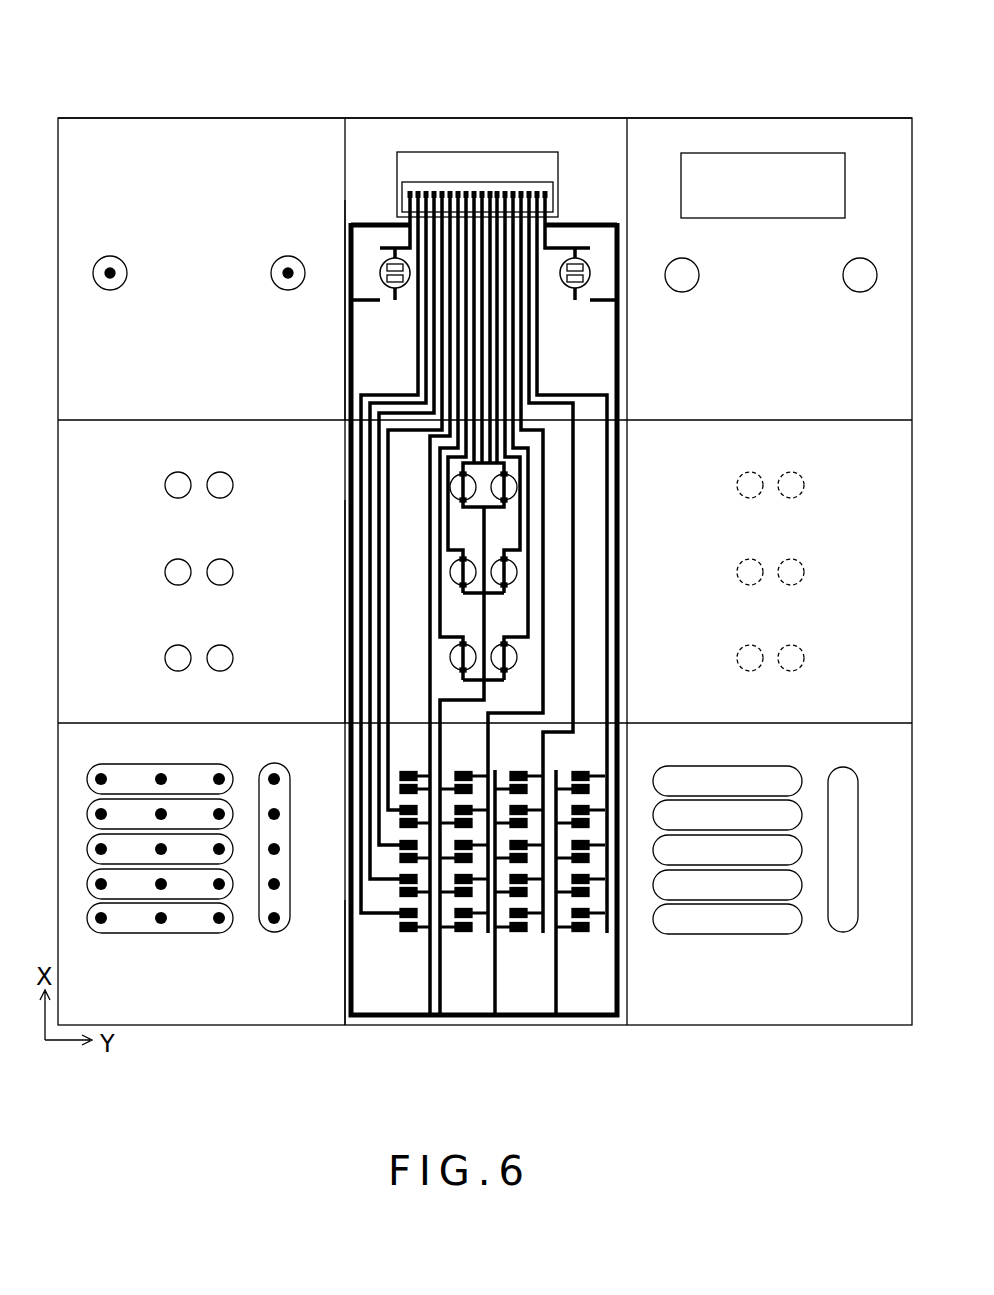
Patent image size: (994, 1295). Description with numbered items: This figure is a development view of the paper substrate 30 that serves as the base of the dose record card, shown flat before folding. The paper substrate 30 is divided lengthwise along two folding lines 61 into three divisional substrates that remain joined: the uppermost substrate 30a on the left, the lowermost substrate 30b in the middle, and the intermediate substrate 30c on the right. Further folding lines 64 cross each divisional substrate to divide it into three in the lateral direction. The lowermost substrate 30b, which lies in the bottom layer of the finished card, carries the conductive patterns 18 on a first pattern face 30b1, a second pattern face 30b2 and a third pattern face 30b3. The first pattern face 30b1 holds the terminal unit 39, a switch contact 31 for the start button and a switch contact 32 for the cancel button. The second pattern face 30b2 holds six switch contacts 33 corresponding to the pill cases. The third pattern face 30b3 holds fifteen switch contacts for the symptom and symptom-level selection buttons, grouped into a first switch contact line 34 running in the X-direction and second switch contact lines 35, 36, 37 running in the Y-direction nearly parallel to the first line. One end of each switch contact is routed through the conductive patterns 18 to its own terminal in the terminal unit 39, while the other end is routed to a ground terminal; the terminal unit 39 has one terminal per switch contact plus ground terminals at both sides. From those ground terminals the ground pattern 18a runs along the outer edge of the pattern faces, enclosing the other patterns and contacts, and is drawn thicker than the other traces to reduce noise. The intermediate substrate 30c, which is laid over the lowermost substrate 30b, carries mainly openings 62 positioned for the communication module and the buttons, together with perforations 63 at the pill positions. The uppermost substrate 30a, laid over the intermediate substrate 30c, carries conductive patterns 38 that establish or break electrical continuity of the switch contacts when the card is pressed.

The paper substrate 30 is at (679, 58).
The uppermost substrate 30a is at (305, 130).
The lowermost substrate 30b is at (507, 128).
The intermediate substrate 30c is at (675, 135).
The first pattern face 30b1 is at (347, 357).
The second pattern face 30b2 is at (347, 618).
The third pattern face 30b3 is at (416, 995).
The conductive patterns 18 is at (622, 617).
The ground pattern 18a is at (380, 223).
The switch contact 31 is at (408, 289).
The switch contact 32 is at (553, 289).
The switch contacts 33 is at (456, 573).
The first switch contact line 34 is at (380, 982).
The second switch contact line 35 is at (473, 982).
The second switch contact line 36 is at (528, 982).
The second switch contact line 37 is at (584, 982).
The conductive patterns 38 is at (104, 262).
The terminal unit 39 is at (545, 197).
The folding lines 61 is at (343, 197).
The openings 62 is at (700, 272).
The perforations 63 is at (805, 493).
The folding lines 64 is at (742, 420).